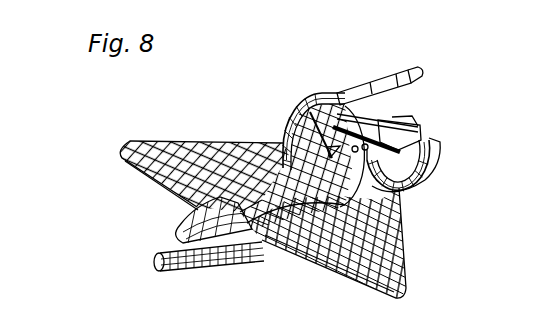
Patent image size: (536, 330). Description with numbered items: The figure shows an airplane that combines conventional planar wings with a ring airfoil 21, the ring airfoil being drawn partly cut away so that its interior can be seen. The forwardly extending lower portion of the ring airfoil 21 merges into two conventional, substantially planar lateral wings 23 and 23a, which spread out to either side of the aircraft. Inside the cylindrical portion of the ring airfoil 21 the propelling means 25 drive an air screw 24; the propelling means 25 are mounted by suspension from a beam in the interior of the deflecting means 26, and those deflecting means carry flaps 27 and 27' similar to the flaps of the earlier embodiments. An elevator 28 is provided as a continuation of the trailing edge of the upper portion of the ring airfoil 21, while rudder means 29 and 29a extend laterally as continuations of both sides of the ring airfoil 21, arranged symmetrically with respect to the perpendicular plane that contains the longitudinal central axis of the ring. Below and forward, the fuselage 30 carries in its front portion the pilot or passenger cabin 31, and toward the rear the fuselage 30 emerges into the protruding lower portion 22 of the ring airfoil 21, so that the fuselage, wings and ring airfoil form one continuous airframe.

The ring airfoil 21 is at (420, 172).
The protruding lower portion 22 is at (304, 198).
The lateral wing 23 is at (196, 157).
The lateral wing 23a is at (398, 246).
The air screw 24 is at (297, 116).
The propelling means 25 is at (352, 118).
The deflecting means 26 is at (372, 117).
The flap 27 is at (355, 100).
The flap 27' is at (425, 125).
The elevator 28 is at (412, 71).
The rudder means 29 is at (443, 148).
The rudder means 29a is at (324, 95).
The fuselage 30 is at (229, 254).
The pilot or passenger cabin 31 is at (181, 228).